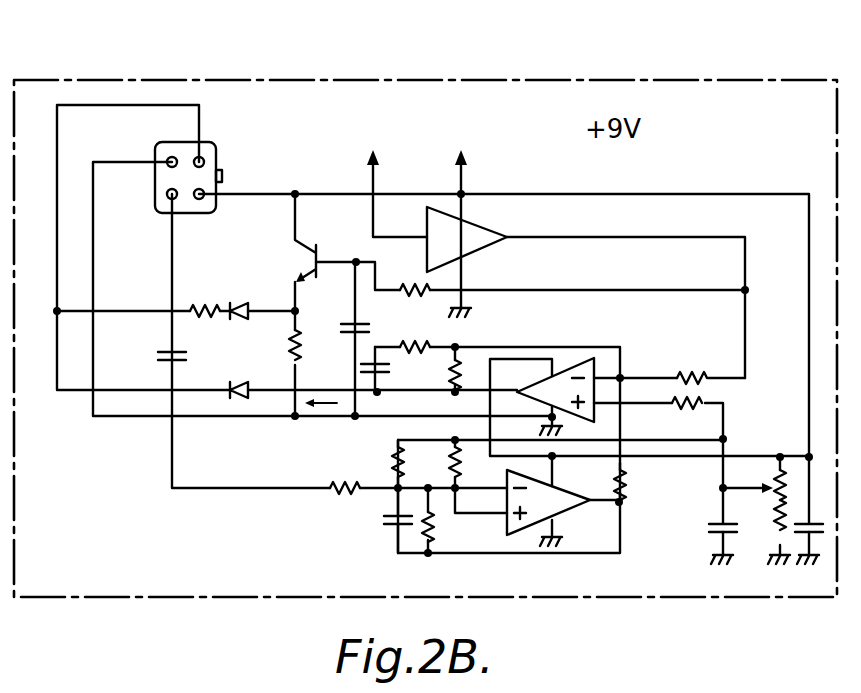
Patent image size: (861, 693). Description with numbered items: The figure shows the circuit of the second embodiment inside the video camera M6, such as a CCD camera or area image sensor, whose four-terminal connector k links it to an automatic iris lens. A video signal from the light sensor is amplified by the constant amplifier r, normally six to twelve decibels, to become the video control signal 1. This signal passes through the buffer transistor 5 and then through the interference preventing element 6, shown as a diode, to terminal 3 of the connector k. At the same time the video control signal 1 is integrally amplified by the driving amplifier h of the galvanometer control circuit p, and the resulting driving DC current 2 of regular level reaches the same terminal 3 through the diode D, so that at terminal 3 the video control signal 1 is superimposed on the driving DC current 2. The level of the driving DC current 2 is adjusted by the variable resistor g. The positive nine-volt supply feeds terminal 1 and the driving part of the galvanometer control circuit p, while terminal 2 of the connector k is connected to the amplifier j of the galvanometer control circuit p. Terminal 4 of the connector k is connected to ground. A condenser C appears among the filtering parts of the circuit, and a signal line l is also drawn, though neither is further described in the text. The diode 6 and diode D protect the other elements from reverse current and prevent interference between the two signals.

The video camera M6 is at (610, 79).
The connector k is at (156, 182).
The video control signal 1 is at (199, 199).
The driving DC current 2 is at (168, 198).
The terminal ③ of connector 3 is at (205, 158).
The terminal ④ of connector 4 is at (165, 158).
The buffer transistor 5 is at (330, 252).
The interference preventing element (diode) 6 is at (240, 300).
The condenser C is at (152, 351).
The diode D is at (248, 381).
The constant amplifier r is at (470, 234).
The feedback line l is at (746, 264).
The driving amplifier h is at (572, 362).
The amplifier j is at (560, 504).
The galvanometer control circuit p is at (505, 514).
The variable resistor g is at (767, 503).